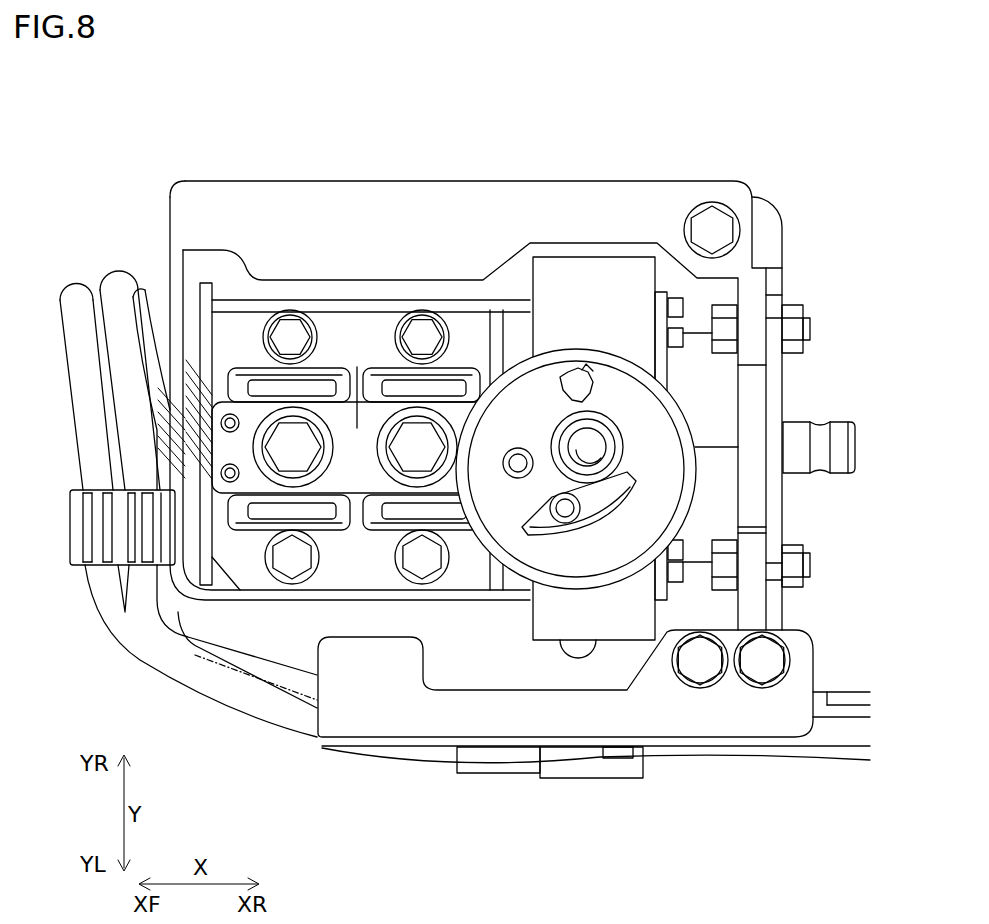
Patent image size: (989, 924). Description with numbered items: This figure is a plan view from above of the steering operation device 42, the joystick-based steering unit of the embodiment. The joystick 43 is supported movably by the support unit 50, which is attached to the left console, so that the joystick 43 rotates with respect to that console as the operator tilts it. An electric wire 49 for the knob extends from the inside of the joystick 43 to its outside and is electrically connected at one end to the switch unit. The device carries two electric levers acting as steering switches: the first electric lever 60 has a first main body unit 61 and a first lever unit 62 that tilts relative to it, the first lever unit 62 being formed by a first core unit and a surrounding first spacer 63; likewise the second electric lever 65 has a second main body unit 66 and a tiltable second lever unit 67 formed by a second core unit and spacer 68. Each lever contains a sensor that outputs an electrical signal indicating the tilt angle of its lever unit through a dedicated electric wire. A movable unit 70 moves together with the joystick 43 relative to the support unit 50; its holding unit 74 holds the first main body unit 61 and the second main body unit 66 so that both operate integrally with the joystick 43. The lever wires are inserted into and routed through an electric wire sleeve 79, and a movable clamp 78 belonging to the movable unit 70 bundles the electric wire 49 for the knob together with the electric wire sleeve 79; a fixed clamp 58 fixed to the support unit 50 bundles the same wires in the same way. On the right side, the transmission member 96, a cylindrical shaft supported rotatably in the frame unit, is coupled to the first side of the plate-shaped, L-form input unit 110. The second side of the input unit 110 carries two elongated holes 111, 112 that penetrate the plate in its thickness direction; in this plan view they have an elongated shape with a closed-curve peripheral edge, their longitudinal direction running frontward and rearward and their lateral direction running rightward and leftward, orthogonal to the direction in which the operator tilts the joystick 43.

The steering operation device 42 is at (832, 216).
The joystick 43 is at (650, 425).
The electric wire for the knob 49 is at (140, 473).
The support unit 50 is at (588, 202).
The fixed clamp 58 is at (100, 528).
The first electric lever 60 is at (247, 372).
The first main body unit 61 is at (340, 395).
The first lever unit 62 is at (258, 405).
The first core unit and first spacer 63 is at (290, 440).
The second electric lever 65 is at (478, 352).
The second main body unit 66 is at (462, 370).
The second lever unit 67 is at (416, 420).
The second core unit and second spacer 68 is at (447, 392).
The movable unit 70 is at (253, 607).
The holding unit 74 is at (220, 350).
The movable clamp 78 is at (168, 432).
The electric wire sleeve 79 is at (97, 440).
The transmission member 96 is at (793, 458).
The input unit 110 is at (358, 425).
The elongated hole 111 is at (318, 420).
The elongated hole 112 is at (405, 437).